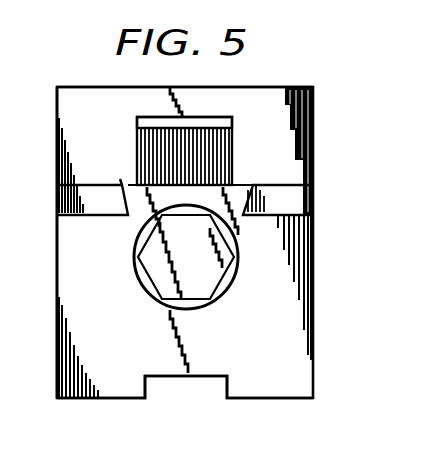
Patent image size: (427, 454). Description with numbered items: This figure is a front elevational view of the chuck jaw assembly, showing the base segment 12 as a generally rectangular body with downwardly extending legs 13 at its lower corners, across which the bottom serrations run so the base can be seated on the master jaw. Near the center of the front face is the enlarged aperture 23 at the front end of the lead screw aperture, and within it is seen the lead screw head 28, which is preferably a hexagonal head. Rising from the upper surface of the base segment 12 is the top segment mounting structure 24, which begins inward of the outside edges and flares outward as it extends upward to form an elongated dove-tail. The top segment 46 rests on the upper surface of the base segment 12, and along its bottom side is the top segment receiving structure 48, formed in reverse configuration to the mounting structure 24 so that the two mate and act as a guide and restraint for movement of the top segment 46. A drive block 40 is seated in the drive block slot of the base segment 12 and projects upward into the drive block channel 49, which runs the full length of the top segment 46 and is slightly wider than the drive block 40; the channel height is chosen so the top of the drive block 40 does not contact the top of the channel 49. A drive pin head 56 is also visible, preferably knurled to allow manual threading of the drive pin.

The base segment 12 is at (83, 270).
The downwardly extending legs 13 is at (110, 372).
The enlarged aperture 23 is at (235, 282).
The top segment mounting structure 24 is at (238, 193).
The lead screw head 28 is at (203, 272).
The drive block 40 is at (213, 150).
The top segment 46 is at (90, 98).
The top segment receiving structure 48 is at (116, 176).
The drive block channel 49 is at (206, 116).
The drive pin head 56 is at (54, 145).